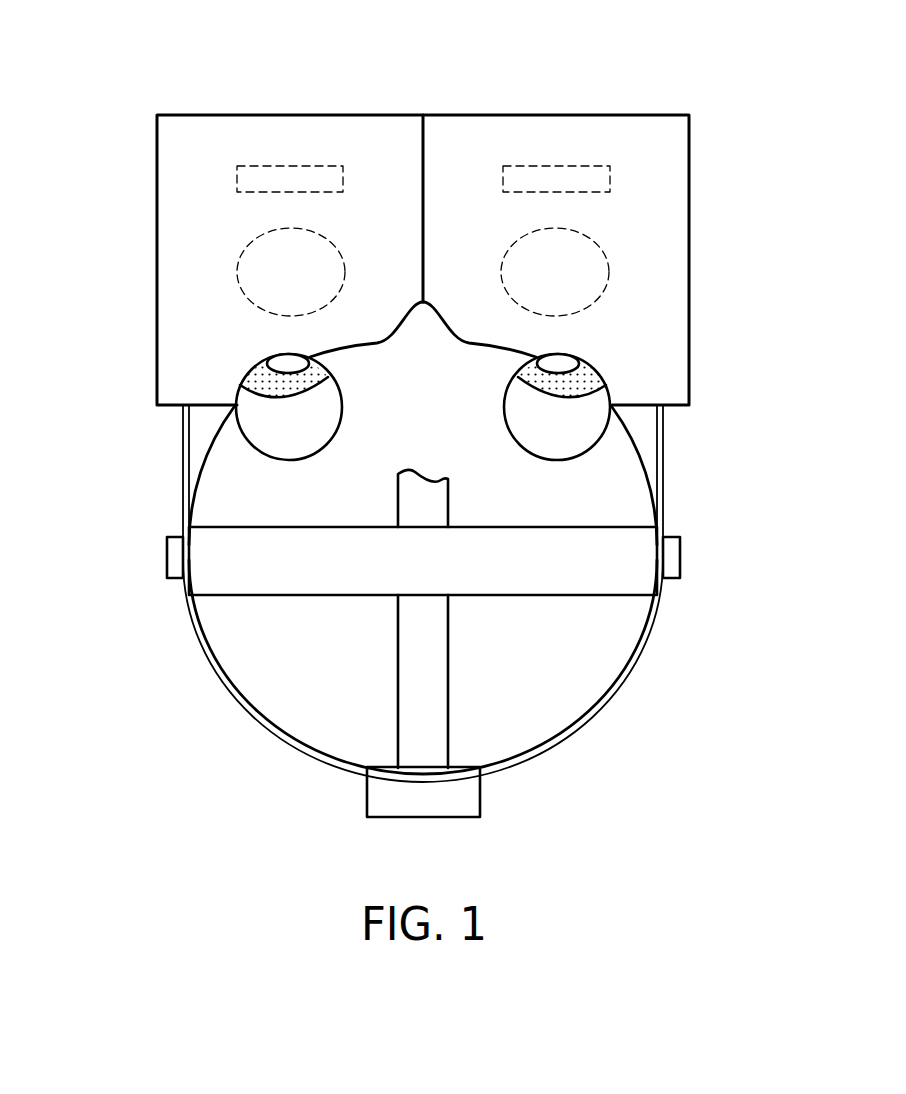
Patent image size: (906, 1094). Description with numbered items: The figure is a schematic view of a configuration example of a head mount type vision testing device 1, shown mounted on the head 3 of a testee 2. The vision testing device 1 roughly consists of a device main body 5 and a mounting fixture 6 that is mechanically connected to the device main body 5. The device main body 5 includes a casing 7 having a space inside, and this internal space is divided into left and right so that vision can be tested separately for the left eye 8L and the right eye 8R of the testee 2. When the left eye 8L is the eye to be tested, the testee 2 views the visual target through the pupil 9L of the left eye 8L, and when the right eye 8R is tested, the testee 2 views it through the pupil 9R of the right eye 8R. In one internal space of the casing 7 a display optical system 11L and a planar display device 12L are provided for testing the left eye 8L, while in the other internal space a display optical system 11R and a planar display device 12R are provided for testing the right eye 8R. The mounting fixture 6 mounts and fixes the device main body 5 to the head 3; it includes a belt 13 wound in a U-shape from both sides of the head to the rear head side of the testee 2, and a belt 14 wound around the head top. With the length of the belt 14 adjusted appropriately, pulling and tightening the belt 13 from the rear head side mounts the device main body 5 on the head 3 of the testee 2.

The vision testing device 1 is at (628, 78).
The testee 2 is at (178, 685).
The head 3 is at (573, 667).
The device main body 5 is at (267, 113).
The casing 7 is at (430, 208).
The mounting fixture 6 is at (653, 633).
The left eye 8L is at (260, 443).
The right eye 8R is at (572, 443).
The pupil 9L is at (287, 361).
The pupil 9R is at (561, 361).
The display optical system 11L is at (252, 300).
The display optical system 11R is at (598, 306).
The planar display device 12L is at (237, 181).
The planar display device 12R is at (610, 179).
The belt 13 is at (190, 618).
The belt 14 is at (332, 578).